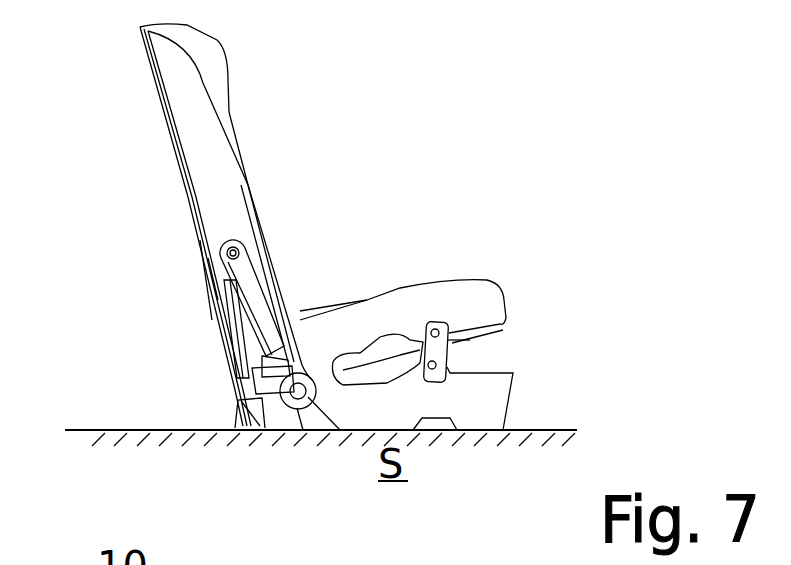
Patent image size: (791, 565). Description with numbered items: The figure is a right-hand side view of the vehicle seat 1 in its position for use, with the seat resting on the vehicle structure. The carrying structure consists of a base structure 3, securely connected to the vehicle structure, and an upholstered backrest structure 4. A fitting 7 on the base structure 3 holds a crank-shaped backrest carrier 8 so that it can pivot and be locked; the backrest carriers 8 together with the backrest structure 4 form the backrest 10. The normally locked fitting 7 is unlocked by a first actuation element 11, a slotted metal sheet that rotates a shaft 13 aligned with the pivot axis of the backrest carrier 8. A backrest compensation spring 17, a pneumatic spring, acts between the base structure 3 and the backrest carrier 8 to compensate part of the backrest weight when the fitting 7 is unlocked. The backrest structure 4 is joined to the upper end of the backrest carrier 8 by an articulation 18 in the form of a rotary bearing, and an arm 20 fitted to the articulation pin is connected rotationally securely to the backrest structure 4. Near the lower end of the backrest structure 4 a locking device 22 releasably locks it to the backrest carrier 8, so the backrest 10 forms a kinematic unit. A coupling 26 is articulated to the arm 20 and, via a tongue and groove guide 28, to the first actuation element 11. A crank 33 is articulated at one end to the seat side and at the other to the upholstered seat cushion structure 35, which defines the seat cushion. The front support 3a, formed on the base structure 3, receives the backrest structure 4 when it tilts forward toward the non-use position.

The vehicle seat 1 is at (409, 121).
The base structure 3 is at (497, 397).
The front support 3a is at (343, 378).
The backrest structure 4 is at (168, 123).
The fitting 7 is at (331, 412).
The backrest carrier 8 is at (198, 259).
The backrest 10 is at (285, 305).
The first actuation element 11 is at (237, 420).
The shaft 13 is at (300, 408).
The backrest compensation spring 17 is at (213, 322).
The articulation 18 is at (238, 246).
The arm 20 is at (202, 262).
The locking device 22 is at (240, 402).
The coupling 26 is at (273, 283).
The tongue and groove guide 28 is at (265, 412).
The crank 33 is at (452, 345).
The seat cushion structure 35 is at (507, 322).